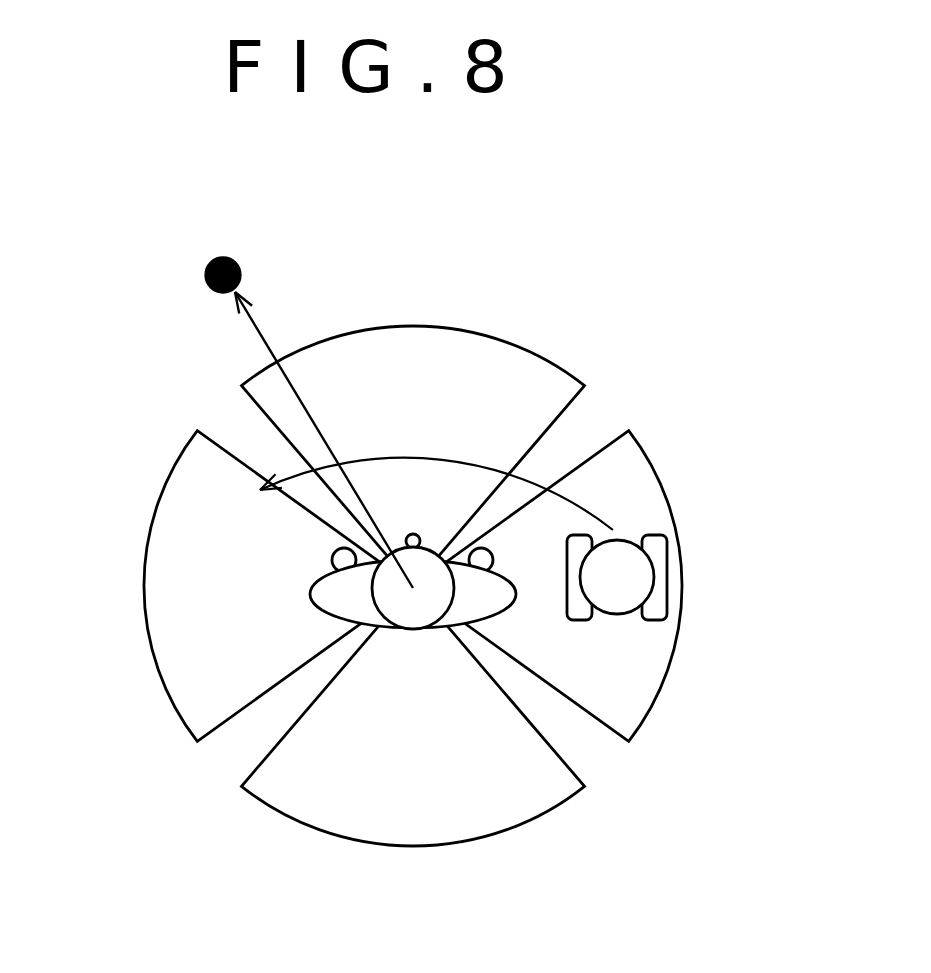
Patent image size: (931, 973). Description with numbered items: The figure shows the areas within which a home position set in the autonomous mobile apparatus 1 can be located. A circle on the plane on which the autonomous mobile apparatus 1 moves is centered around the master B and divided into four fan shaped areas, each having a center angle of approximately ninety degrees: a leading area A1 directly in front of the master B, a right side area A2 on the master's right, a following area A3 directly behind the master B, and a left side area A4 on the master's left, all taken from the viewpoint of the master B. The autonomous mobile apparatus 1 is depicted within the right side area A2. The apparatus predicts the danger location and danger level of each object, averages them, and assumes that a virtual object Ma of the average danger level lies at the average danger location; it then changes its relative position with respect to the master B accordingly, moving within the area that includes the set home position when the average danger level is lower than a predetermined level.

The leading area A1 is at (523, 368).
The right side area A2 is at (640, 685).
The following area A3 is at (450, 825).
The left side area A4 is at (163, 642).
The master B is at (330, 594).
The autonomous mobile apparatus 1 is at (657, 556).
The virtual object Ma is at (212, 263).